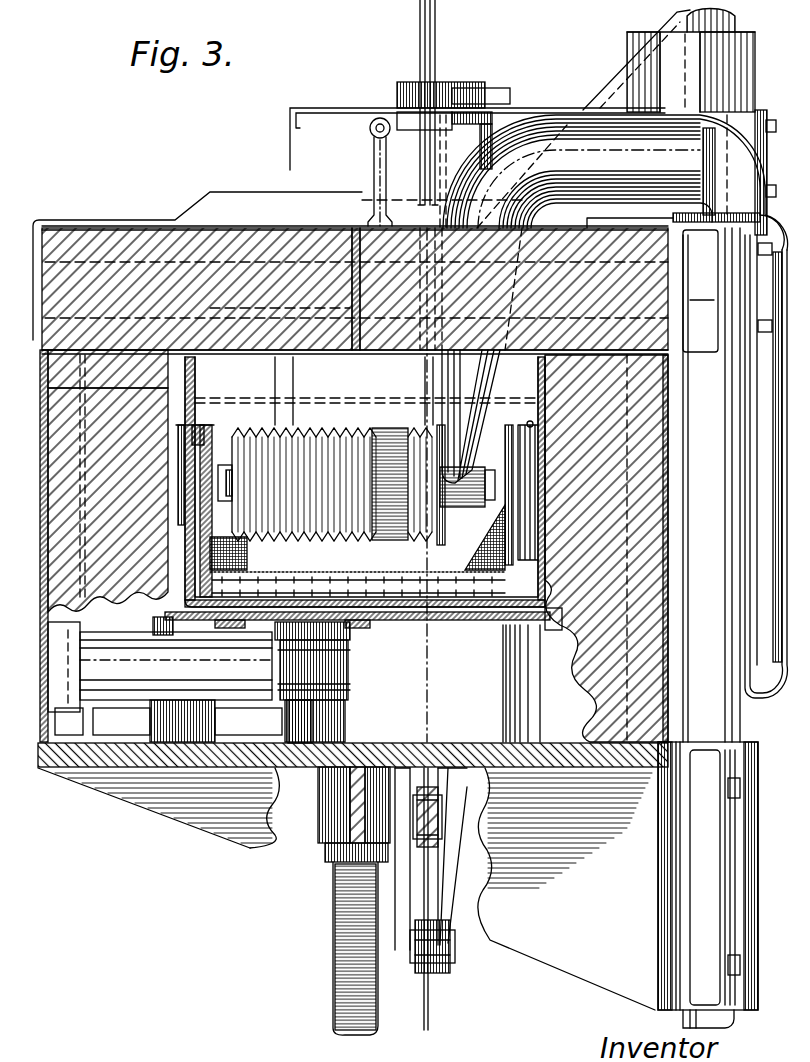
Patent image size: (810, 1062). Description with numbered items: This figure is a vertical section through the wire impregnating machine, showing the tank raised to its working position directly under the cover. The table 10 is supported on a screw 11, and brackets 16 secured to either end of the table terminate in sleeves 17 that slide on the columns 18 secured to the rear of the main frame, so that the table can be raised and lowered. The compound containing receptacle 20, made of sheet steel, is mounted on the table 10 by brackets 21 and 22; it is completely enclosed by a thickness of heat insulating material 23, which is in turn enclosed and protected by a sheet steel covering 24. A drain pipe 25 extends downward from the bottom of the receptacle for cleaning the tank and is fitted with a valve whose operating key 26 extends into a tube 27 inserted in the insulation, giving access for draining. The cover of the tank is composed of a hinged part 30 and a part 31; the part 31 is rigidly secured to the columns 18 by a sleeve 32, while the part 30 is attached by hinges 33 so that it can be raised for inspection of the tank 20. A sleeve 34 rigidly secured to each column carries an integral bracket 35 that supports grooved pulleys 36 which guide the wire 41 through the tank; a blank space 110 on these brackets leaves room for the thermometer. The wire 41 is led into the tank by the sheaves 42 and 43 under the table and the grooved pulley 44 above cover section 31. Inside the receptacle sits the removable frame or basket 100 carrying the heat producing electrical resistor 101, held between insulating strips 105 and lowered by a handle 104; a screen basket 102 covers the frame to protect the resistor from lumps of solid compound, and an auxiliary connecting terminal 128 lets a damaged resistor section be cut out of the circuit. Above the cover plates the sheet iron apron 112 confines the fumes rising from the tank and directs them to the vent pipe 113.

The table 10 is at (68, 760).
The screw 11 is at (335, 896).
The brackets 16 is at (160, 795).
The sleeves 17 is at (742, 891).
The columns 18 is at (736, 1020).
The compound containing receptacle 20 is at (445, 625).
The bracket 21 is at (160, 622).
The bracket 22 is at (512, 633).
The heat insulating material 23 is at (68, 562).
The sheet steel covering 24 is at (46, 470).
The drain pipe 25 is at (360, 704).
The operating key 26 is at (262, 690).
The tube 27 is at (122, 690).
The hinged cover part 30 is at (148, 240).
The cover part 31 is at (650, 280).
The sleeve 32 is at (702, 321).
The hinges 33 is at (374, 171).
The sleeve 34 is at (760, 118).
The brackets 35 is at (528, 140).
The grooved pulleys 36 is at (340, 440).
The wire 41 is at (432, 1012).
The sheave 42 is at (440, 975).
The sheave 43 is at (435, 835).
The grooved pulley 44 is at (437, 50).
The frame or basket 100 is at (388, 580).
The electrical resistor 101 is at (372, 604).
The screen basket 102 is at (290, 570).
The handle 104 is at (192, 378).
The insulating strips 105 is at (510, 530).
The blank space 110 is at (385, 440).
The sheet iron apron 112 is at (330, 108).
The vent pipe 113 is at (630, 40).
The auxiliary connecting terminal 128 is at (192, 420).